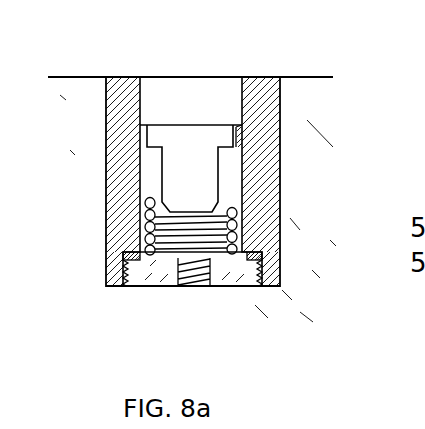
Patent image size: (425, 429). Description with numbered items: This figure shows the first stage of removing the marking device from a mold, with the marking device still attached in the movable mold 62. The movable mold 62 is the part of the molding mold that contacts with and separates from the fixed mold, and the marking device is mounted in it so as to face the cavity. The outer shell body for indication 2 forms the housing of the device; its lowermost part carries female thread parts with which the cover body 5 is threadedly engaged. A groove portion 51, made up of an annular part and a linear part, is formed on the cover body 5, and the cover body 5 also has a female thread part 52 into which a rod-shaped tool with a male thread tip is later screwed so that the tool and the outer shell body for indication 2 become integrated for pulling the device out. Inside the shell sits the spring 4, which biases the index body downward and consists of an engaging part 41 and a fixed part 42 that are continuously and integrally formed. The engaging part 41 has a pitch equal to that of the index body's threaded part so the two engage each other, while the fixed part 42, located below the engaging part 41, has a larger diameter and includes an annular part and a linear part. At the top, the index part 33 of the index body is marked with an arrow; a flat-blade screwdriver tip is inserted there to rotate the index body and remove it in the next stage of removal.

The movable mold 62 is at (313, 77).
The outer shell body for indication 2 is at (254, 77).
The index part 33 is at (198, 92).
The spring 4 is at (282, 200).
The engaging part 41 is at (240, 213).
The fixed part 42 is at (280, 250).
The groove portion 51 is at (126, 255).
The female thread part 52 is at (126, 269).
The cover body 5 is at (150, 286).